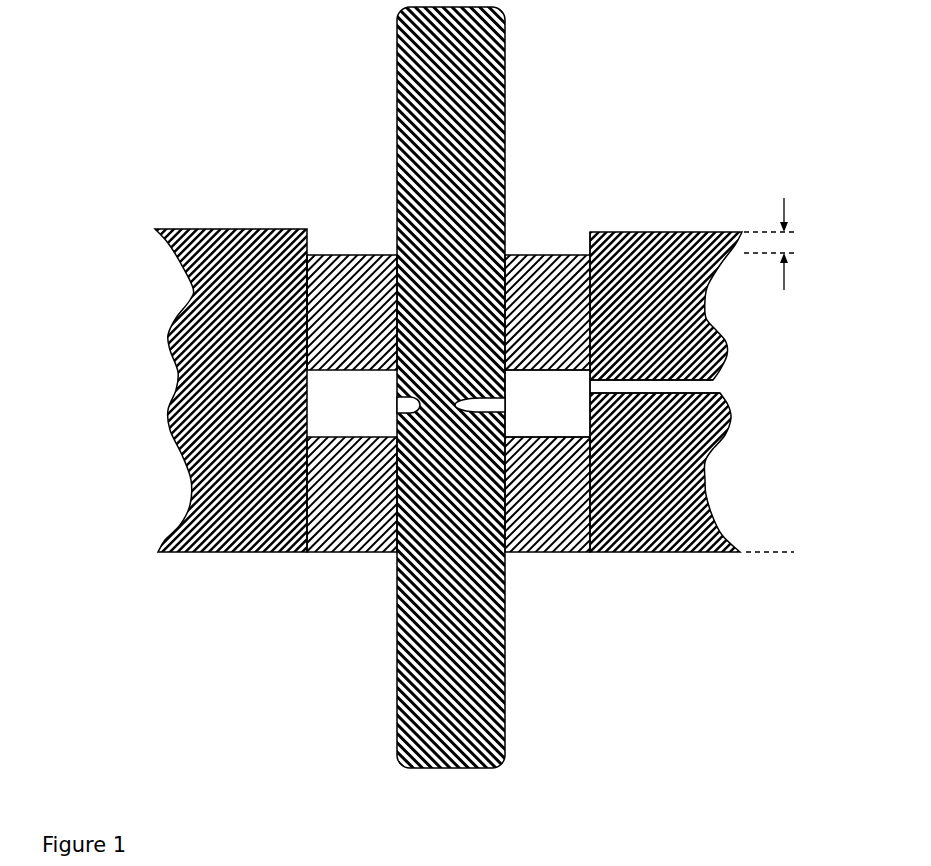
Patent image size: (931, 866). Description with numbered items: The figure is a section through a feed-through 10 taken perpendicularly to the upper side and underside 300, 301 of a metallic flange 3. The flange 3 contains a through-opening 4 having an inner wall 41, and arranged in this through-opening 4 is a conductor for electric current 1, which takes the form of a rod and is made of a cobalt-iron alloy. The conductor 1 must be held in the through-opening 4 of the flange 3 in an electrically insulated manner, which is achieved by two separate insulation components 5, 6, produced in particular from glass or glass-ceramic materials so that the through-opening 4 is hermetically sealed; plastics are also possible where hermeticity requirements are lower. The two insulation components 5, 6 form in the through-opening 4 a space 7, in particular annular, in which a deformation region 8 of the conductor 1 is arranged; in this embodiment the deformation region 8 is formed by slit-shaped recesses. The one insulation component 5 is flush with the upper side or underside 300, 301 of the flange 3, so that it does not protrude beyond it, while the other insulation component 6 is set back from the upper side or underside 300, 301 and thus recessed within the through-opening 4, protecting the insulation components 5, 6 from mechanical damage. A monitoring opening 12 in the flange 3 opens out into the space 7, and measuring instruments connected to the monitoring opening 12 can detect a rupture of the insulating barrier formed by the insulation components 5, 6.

The conductor for electric current 1 is at (498, 68).
The flange 3 is at (657, 243).
The through-opening 4 is at (555, 232).
The insulation component 5 is at (358, 538).
The insulation component 6 is at (347, 267).
The space 7 is at (550, 420).
The deformation region 8 is at (505, 402).
The feed-through 10 is at (265, 686).
The monitoring opening 12 is at (715, 388).
The inner wall 41 is at (310, 290).
The upper side 300 is at (216, 218).
The underside 301 is at (228, 570).